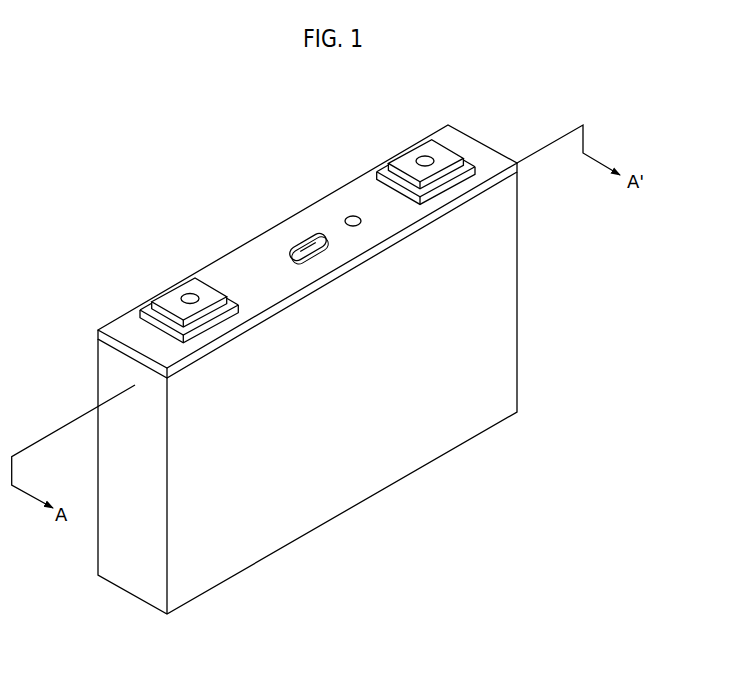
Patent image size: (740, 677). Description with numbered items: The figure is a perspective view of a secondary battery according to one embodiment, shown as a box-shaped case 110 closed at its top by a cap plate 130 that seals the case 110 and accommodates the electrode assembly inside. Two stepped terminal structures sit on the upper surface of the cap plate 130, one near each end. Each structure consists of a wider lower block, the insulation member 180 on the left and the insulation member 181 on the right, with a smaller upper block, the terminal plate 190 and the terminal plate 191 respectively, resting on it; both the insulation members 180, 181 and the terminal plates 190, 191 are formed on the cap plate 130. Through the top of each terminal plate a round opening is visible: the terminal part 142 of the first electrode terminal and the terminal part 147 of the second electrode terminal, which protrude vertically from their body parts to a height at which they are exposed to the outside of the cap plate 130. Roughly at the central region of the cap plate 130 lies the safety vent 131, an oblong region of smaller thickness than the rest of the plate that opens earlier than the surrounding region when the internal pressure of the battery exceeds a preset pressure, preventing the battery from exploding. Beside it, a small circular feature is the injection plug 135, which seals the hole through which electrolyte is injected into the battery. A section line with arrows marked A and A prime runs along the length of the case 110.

The case 110 is at (362, 484).
The cap plate 130 is at (100, 337).
The safety vent 131 is at (303, 240).
The injection plug 135 is at (350, 216).
The terminal part 142 is at (190, 294).
The terminal part 147 is at (424, 157).
The insulation member 180 is at (138, 313).
The insulation member 181 is at (372, 172).
The terminal plate 190 is at (167, 297).
The terminal plate 191 is at (402, 165).